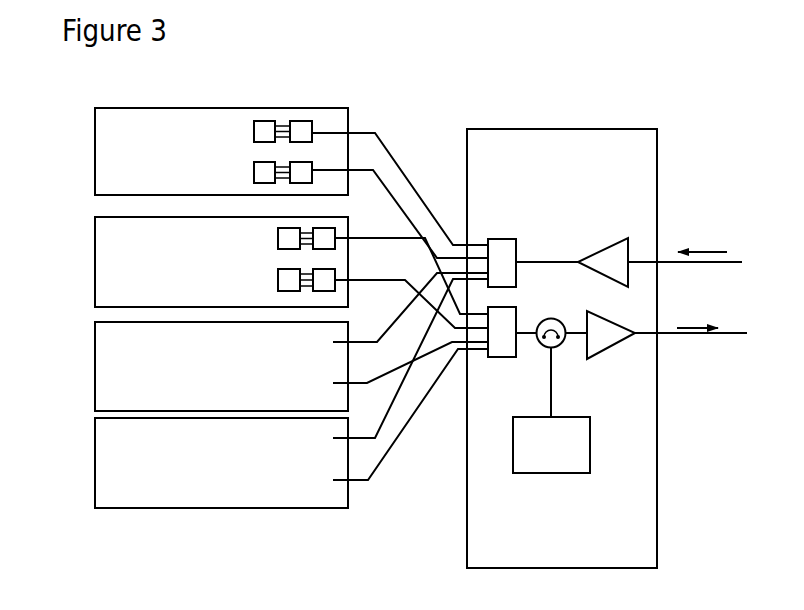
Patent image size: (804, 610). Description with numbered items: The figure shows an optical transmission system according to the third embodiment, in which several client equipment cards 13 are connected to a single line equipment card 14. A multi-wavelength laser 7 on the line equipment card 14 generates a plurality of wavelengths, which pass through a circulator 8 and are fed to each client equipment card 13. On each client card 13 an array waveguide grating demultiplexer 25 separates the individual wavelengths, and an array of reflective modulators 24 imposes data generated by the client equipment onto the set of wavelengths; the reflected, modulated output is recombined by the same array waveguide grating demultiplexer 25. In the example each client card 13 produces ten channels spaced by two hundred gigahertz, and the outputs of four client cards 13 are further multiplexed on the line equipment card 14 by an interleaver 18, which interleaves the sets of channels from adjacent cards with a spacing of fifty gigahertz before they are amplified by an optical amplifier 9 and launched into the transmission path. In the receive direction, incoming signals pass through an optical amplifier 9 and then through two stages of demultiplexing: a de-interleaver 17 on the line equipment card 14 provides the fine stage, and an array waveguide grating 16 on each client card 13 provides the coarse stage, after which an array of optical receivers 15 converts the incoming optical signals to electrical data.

The multi-wavelength laser 7 is at (582, 460).
The circulator 8 is at (566, 350).
The optical amplifier 9 is at (620, 293).
The client equipment card 13 is at (157, 116).
The line equipment card 14 is at (573, 167).
The array of optical receivers 15 is at (261, 128).
The array waveguide grating (coarse demultiplexer) 16 is at (303, 128).
The de-interleaver (fine demultiplexer) 17 is at (498, 250).
The interleaver (fine multiplexer) 18 is at (503, 343).
The array of reflective modulators 24 is at (250, 172).
The array waveguide grating demultiplexer (coarse) 25 is at (293, 185).